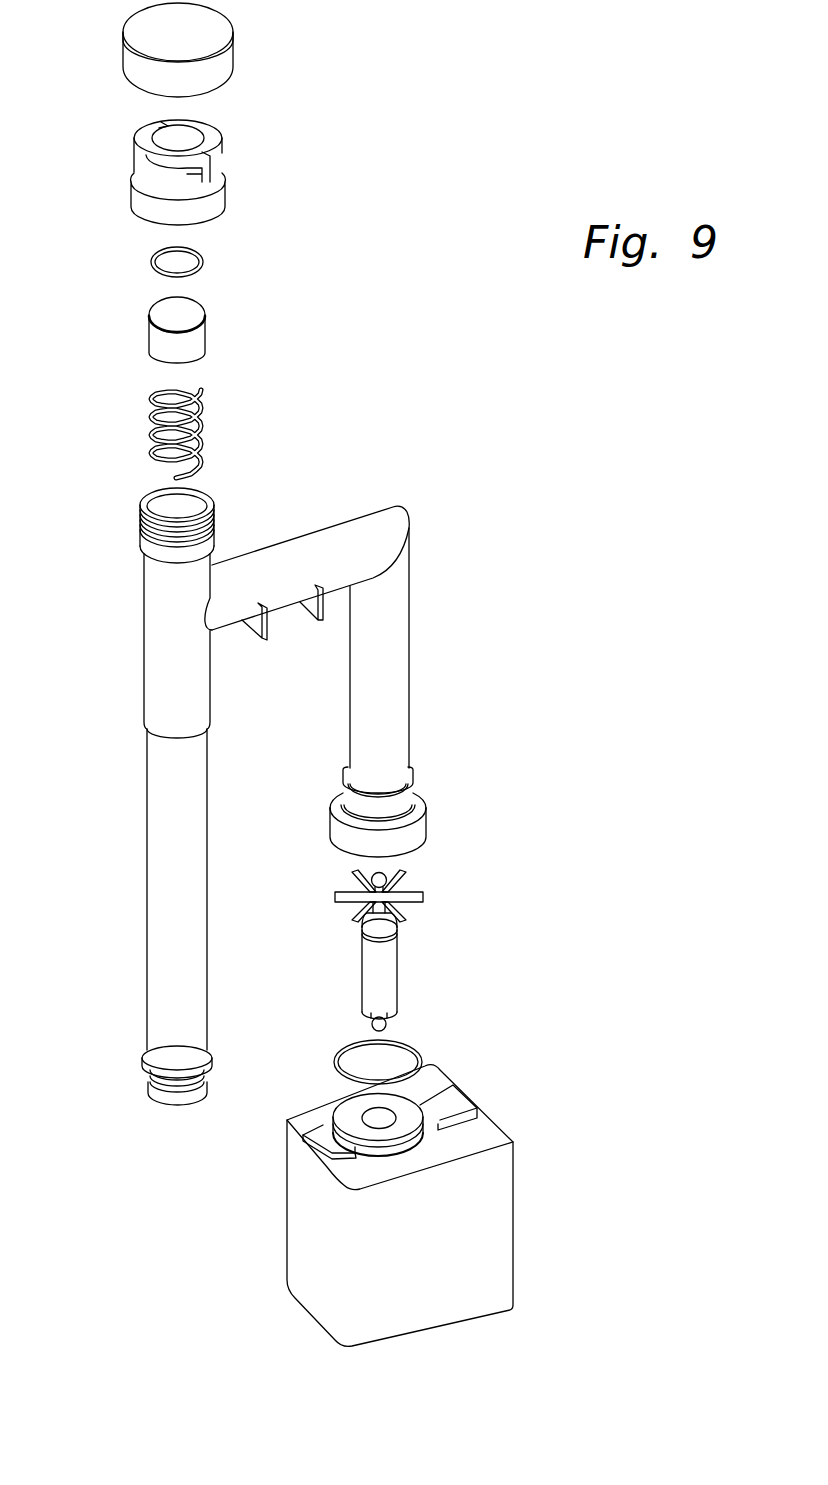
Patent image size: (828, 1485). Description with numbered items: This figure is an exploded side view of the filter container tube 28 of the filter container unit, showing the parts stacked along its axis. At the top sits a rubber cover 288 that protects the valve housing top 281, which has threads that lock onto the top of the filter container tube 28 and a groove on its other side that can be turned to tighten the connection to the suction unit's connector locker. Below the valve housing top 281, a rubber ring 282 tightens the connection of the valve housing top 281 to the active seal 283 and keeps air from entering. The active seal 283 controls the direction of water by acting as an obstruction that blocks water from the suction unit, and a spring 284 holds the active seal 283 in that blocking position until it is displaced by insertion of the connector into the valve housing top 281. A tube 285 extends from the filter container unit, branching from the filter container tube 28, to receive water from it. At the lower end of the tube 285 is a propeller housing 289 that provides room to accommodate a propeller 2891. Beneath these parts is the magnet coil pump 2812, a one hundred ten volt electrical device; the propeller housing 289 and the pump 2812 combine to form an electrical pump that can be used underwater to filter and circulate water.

The filter container tube 28 is at (147, 829).
The valve housing top 281 is at (225, 180).
The rubber ring 282 is at (208, 262).
The active seal 283 is at (208, 337).
The spring 284 is at (205, 432).
The tube 285 is at (410, 618).
The rubber cover 288 is at (236, 60).
The propeller housing 289 is at (418, 802).
The propeller 2891 is at (398, 970).
The magnet coil pump 2812 is at (507, 1125).